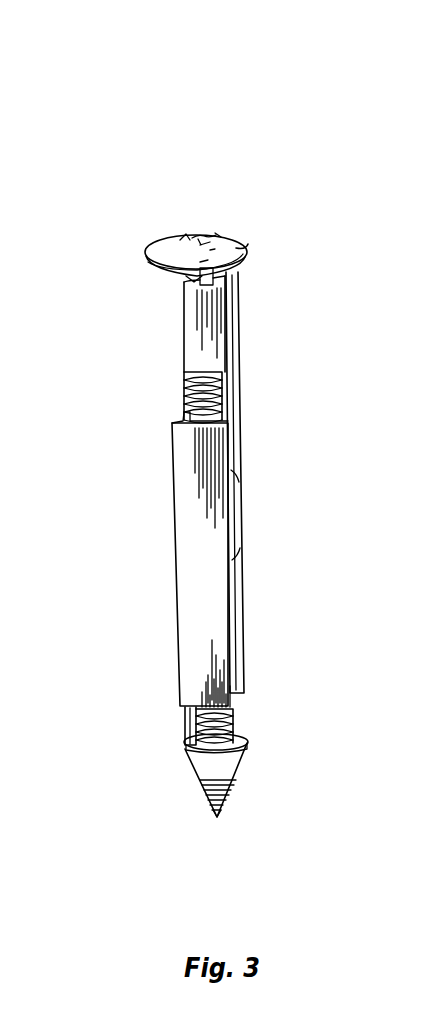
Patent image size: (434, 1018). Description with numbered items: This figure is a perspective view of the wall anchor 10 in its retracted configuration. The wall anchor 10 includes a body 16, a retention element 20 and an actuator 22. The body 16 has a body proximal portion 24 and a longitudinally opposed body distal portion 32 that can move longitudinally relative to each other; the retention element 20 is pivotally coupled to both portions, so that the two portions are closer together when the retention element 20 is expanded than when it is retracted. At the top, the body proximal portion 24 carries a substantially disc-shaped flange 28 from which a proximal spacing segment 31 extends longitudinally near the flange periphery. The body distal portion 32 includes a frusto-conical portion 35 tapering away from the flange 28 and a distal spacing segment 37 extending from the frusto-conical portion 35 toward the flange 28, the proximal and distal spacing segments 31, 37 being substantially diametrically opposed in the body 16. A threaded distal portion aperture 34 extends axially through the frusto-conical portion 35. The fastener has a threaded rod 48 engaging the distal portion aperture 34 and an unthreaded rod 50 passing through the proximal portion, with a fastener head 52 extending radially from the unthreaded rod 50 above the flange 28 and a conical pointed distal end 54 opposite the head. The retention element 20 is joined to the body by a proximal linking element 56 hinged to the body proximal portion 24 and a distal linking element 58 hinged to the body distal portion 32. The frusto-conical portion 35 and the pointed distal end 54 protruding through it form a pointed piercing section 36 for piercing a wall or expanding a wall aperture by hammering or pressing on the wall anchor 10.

The wall anchor 10 is at (102, 111).
The body 16 is at (185, 771).
The retention element 20 is at (166, 475).
The actuator 22 is at (172, 347).
The body proximal portion 24 is at (256, 383).
The flange 28 is at (150, 252).
The proximal spacing segment 31 is at (234, 350).
The body distal portion 32 is at (242, 777).
The distal portion aperture 34 is at (242, 736).
The frusto-conical portion 35 is at (193, 750).
The piercing section 36 is at (283, 673).
The distal spacing segment 37 is at (185, 735).
The threaded rod 48 is at (185, 393).
The unthreaded rod 50 is at (184, 306).
The fastener head 52 is at (225, 232).
The pointed distal end 54 is at (213, 816).
The proximal linking element 56 is at (240, 435).
The distal linking element 58 is at (190, 730).